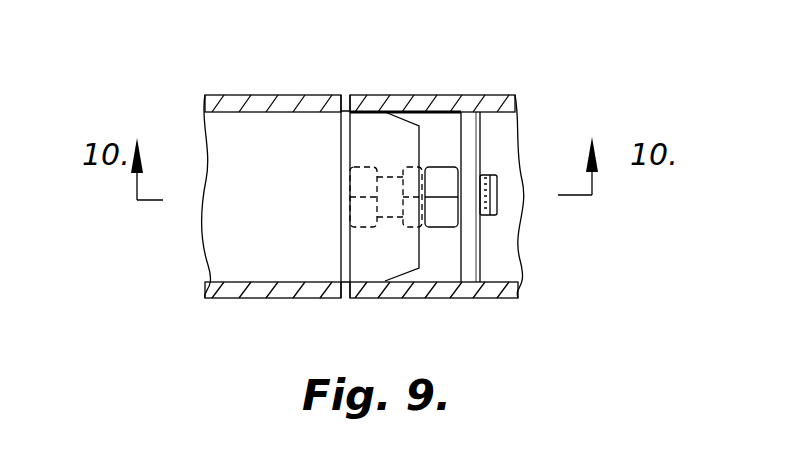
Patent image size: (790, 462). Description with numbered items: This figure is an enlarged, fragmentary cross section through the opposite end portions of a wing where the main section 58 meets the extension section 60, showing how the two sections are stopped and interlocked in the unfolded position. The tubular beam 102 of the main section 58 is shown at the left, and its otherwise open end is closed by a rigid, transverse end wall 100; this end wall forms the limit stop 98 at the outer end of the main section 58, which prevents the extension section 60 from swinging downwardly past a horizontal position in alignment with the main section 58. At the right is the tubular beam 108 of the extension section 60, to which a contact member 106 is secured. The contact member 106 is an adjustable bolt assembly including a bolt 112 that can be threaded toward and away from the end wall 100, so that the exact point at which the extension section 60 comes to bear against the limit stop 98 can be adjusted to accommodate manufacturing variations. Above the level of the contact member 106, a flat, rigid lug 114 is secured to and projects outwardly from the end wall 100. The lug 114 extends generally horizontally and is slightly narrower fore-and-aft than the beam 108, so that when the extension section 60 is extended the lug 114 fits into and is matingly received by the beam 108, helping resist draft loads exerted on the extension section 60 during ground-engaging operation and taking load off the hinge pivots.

The main section 58 is at (195, 100).
The extension section 60 is at (522, 87).
The limit stop 98 is at (355, 243).
The end wall 100 is at (347, 258).
The tubular beam 102 is at (263, 100).
The contact member 106 is at (443, 228).
The tubular beam 108 is at (440, 97).
The bolt 112 is at (365, 180).
The lug 114 is at (382, 127).